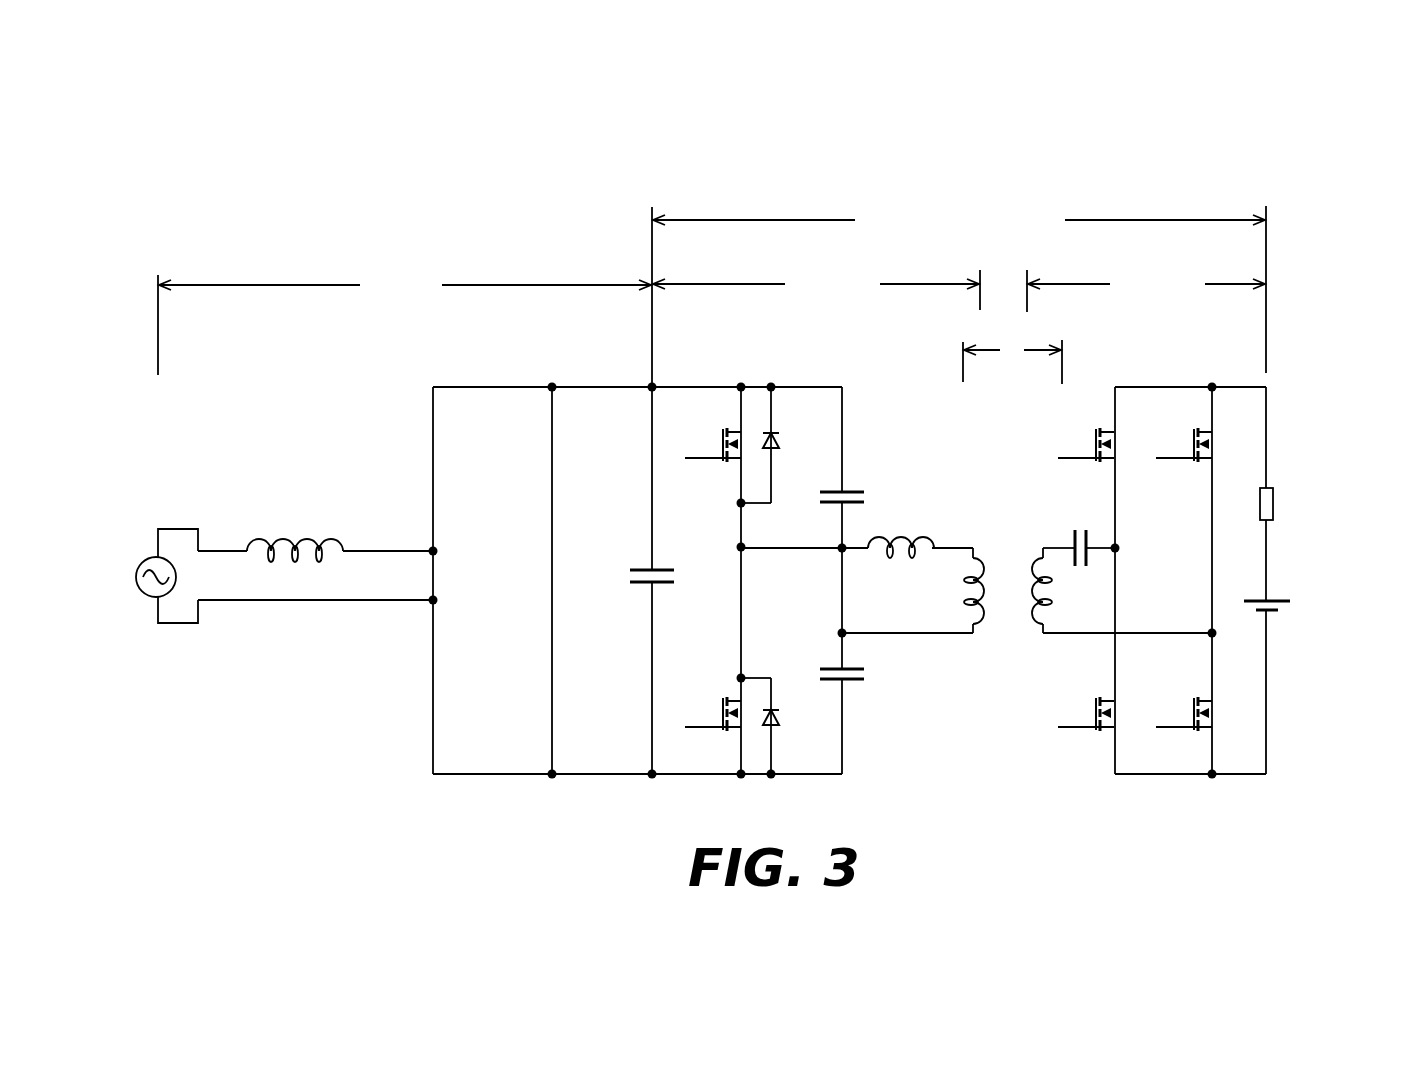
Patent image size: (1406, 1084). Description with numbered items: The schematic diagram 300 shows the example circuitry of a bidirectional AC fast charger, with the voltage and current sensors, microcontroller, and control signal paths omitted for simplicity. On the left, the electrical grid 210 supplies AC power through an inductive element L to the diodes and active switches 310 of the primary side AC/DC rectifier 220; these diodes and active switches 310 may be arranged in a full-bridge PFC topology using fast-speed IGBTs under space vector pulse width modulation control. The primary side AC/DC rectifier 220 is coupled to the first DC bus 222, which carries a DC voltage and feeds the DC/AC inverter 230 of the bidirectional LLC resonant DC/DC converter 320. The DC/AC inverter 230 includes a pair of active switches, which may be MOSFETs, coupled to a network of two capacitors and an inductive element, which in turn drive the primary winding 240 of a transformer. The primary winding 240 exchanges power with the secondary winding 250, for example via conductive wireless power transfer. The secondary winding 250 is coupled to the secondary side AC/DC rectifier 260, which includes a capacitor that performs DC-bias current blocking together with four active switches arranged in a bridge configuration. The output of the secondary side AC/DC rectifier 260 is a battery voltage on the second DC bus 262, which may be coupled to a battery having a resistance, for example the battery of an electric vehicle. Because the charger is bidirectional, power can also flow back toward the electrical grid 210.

The schematic diagram 300 is at (719, 444).
The electrical grid 210 is at (115, 587).
The primary side AC/DC rectifier 220 is at (404, 289).
The first DC bus 222 is at (628, 581).
The DC/AC inverter 230 is at (816, 319).
The primary winding 240 is at (962, 612).
The secondary winding 250 is at (1082, 564).
The secondary side AC/DC rectifier 260 is at (1146, 304).
The second DC bus 262 is at (1325, 553).
The diodes and active switches 310 is at (579, 567).
The bidirectional LLC resonant DC/DC converter 320 is at (959, 276).